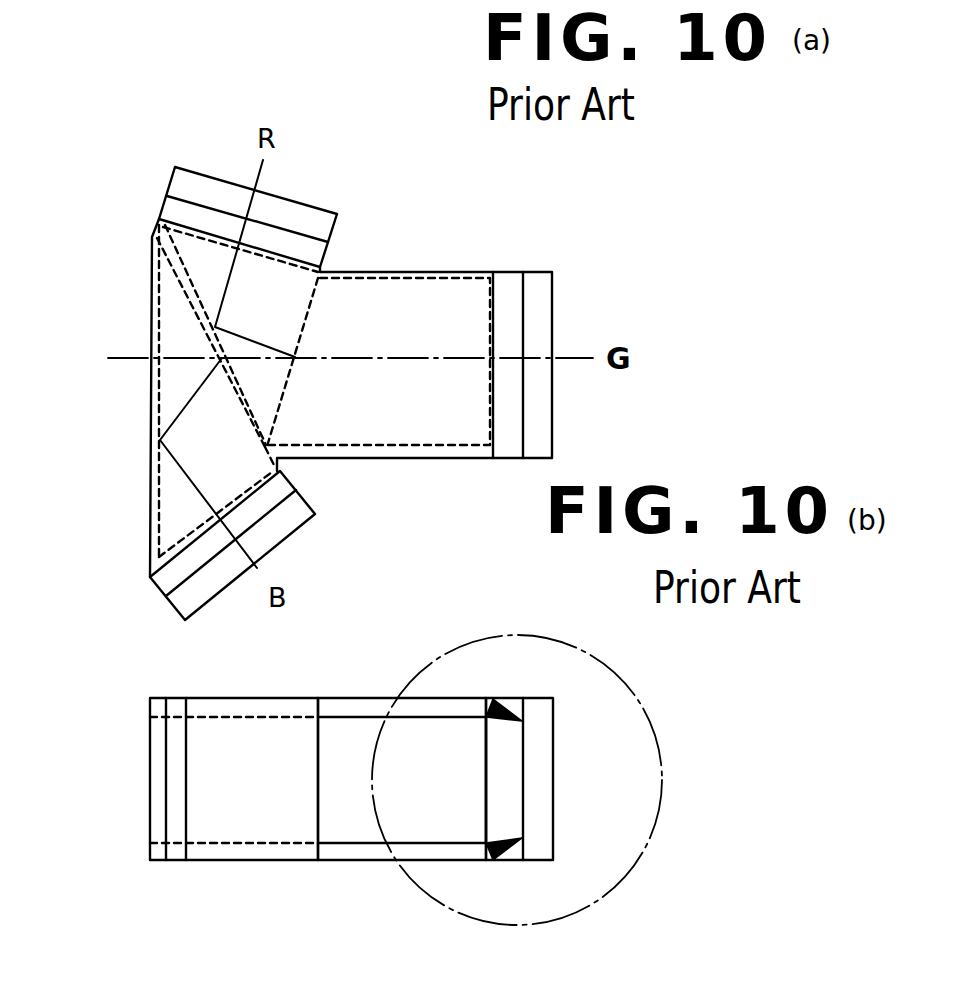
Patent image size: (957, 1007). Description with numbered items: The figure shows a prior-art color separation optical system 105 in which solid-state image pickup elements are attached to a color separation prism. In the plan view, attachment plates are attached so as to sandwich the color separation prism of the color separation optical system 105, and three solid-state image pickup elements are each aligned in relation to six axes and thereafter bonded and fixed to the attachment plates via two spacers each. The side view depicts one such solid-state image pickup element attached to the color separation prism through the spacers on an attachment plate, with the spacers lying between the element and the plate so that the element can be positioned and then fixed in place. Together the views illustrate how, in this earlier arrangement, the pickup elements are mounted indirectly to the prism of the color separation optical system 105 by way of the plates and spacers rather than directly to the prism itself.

The color separation optical system 105 is at (352, 150).